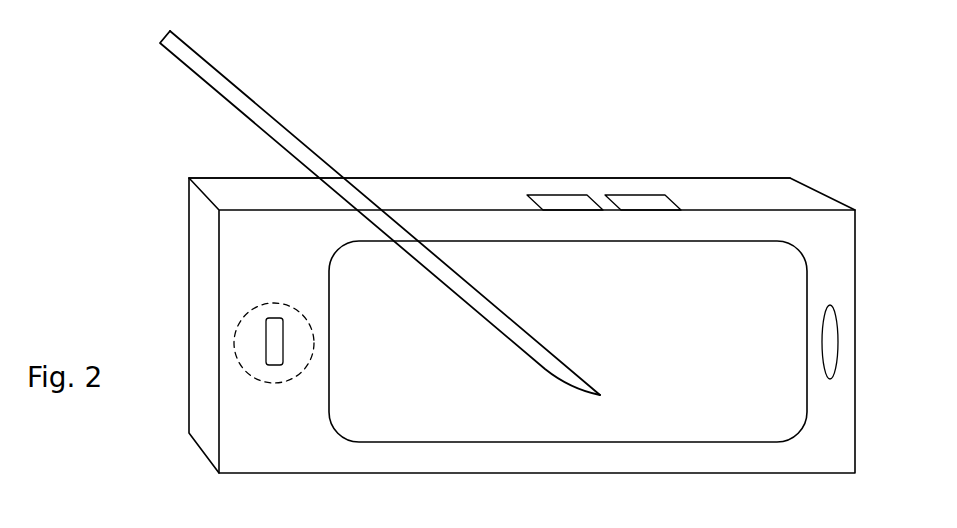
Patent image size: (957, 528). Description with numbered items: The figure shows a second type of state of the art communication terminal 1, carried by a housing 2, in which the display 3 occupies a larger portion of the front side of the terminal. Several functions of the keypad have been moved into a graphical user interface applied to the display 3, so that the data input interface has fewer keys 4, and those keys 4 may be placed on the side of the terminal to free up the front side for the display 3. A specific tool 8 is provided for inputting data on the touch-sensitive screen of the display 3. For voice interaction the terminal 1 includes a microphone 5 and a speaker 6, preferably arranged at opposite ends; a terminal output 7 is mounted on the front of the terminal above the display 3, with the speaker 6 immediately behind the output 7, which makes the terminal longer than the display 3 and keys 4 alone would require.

The communication terminal 1 is at (153, 250).
The housing 2 is at (417, 177).
The display 3 is at (648, 344).
The keys 4 is at (602, 163).
The microphone 5 is at (828, 333).
The speaker 6 is at (273, 305).
The terminal output 7 is at (276, 366).
The tool 8 is at (173, 52).